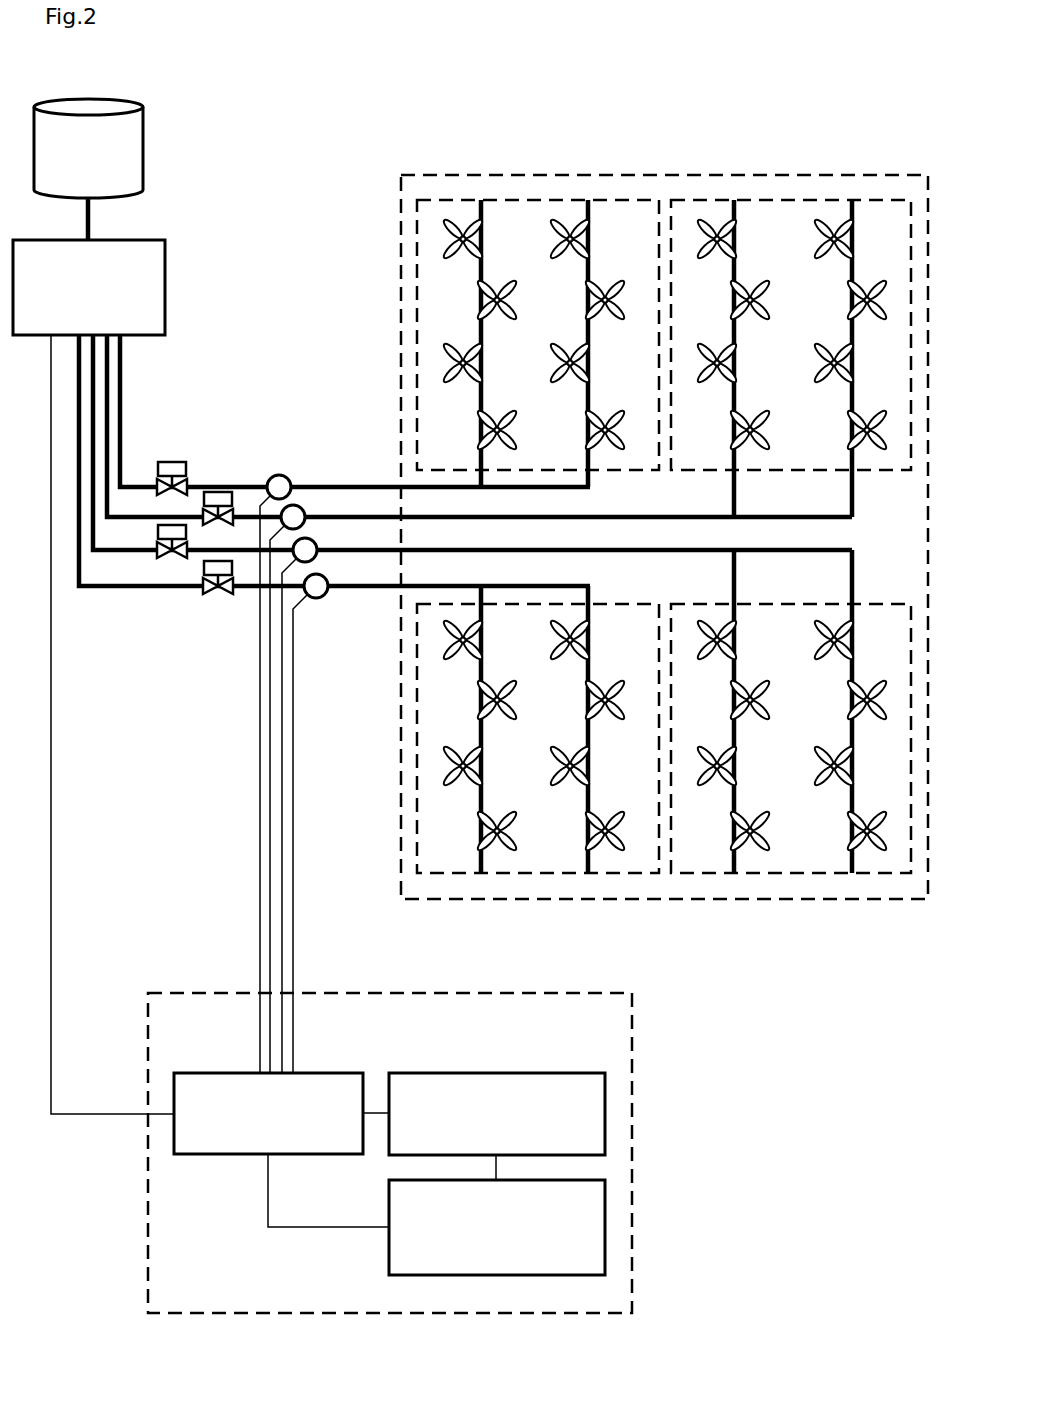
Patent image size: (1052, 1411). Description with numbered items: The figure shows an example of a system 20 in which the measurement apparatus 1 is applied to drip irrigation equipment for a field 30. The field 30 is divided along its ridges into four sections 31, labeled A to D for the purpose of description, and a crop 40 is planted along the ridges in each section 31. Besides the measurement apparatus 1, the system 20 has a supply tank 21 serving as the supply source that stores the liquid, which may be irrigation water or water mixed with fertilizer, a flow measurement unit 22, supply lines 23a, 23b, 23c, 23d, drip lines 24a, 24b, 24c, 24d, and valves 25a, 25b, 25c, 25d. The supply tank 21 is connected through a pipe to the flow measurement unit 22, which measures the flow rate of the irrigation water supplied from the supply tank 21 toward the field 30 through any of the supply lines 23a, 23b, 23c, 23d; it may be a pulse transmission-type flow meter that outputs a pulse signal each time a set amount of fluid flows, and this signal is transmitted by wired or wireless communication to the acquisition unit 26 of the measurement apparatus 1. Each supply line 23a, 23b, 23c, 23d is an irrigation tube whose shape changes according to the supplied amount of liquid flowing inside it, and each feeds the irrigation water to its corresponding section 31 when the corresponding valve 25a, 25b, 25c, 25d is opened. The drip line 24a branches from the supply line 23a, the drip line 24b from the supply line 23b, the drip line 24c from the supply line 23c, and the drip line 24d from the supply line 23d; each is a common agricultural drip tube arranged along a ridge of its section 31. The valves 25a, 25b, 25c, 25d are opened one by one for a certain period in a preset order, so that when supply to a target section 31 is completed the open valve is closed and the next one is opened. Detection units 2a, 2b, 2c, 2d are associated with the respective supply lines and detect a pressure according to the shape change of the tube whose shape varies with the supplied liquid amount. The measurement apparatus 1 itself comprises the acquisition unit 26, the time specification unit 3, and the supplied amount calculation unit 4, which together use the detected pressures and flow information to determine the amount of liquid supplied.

The measurement apparatus 1 is at (388, 993).
The detection unit 2a is at (291, 480).
The detection unit 2b is at (305, 510).
The detection unit 2c is at (325, 597).
The detection unit 2d is at (317, 543).
The time specification unit 3 is at (605, 1113).
The supplied amount calculation unit 4 is at (605, 1227).
The system 20 is at (538, 97).
The supply tank 21 is at (115, 100).
The flow measurement unit 22 is at (132, 240).
The supply line 23a is at (121, 362).
The supply line 23b is at (108, 402).
The supply line 23c is at (133, 589).
The supply line 23d is at (140, 552).
The drip line 24a is at (590, 378).
The drip line 24b is at (852, 378).
The drip line 24c is at (590, 805).
The drip line 24d is at (852, 805).
The valve 25a is at (172, 462).
The valve 25b is at (218, 492).
The valve 25c is at (221, 597).
The valve 25d is at (157, 532).
The acquisition unit 26 is at (174, 1087).
The field 30 is at (665, 175).
The section 31 is at (532, 200).
The crop 40 is at (452, 218).